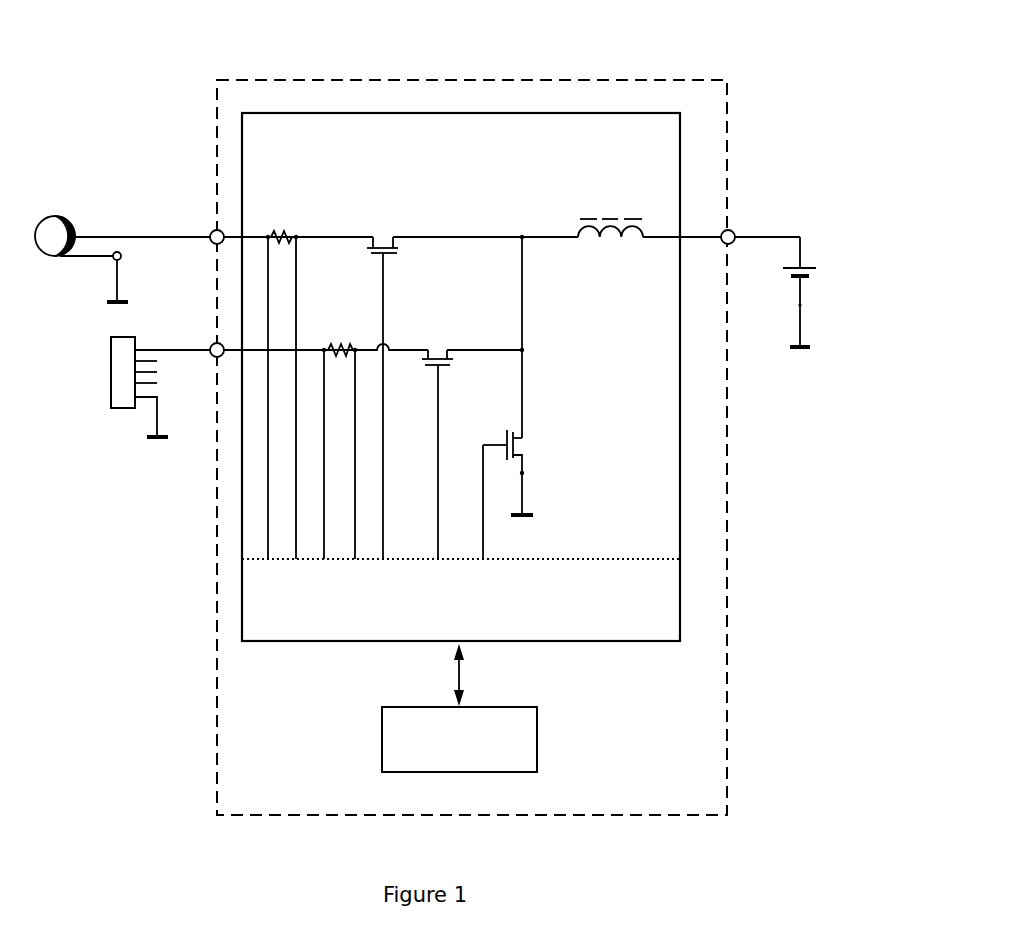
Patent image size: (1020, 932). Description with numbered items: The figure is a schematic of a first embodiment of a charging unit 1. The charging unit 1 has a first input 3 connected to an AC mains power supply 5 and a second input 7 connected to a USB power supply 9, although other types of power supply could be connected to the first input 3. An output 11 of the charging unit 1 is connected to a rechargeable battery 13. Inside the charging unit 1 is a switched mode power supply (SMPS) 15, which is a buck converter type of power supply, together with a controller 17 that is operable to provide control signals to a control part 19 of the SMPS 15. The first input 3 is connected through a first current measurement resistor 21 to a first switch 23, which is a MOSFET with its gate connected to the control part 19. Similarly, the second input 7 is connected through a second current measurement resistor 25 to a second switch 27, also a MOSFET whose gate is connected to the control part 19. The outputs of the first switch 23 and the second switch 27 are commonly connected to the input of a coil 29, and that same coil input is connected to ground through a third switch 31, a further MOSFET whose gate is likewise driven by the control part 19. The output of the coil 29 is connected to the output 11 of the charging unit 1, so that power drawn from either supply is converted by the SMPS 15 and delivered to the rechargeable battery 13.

The charging unit 1 is at (300, 77).
The first input 3 is at (210, 230).
The AC mains power supply 5 is at (57, 215).
The second input 7 is at (212, 343).
The USB power supply 9 is at (108, 413).
The output 11 is at (735, 230).
The rechargeable battery 13 is at (812, 268).
The switched mode power supply (SMPS) 15 is at (643, 112).
The controller 17 is at (537, 745).
The control part 19 is at (652, 632).
The first current measurement resistor 21 is at (280, 230).
The first switch 23 is at (380, 230).
The second current measurement resistor 25 is at (335, 343).
The second switch 27 is at (440, 345).
The coil 29 is at (575, 222).
The third switch 31 is at (521, 450).